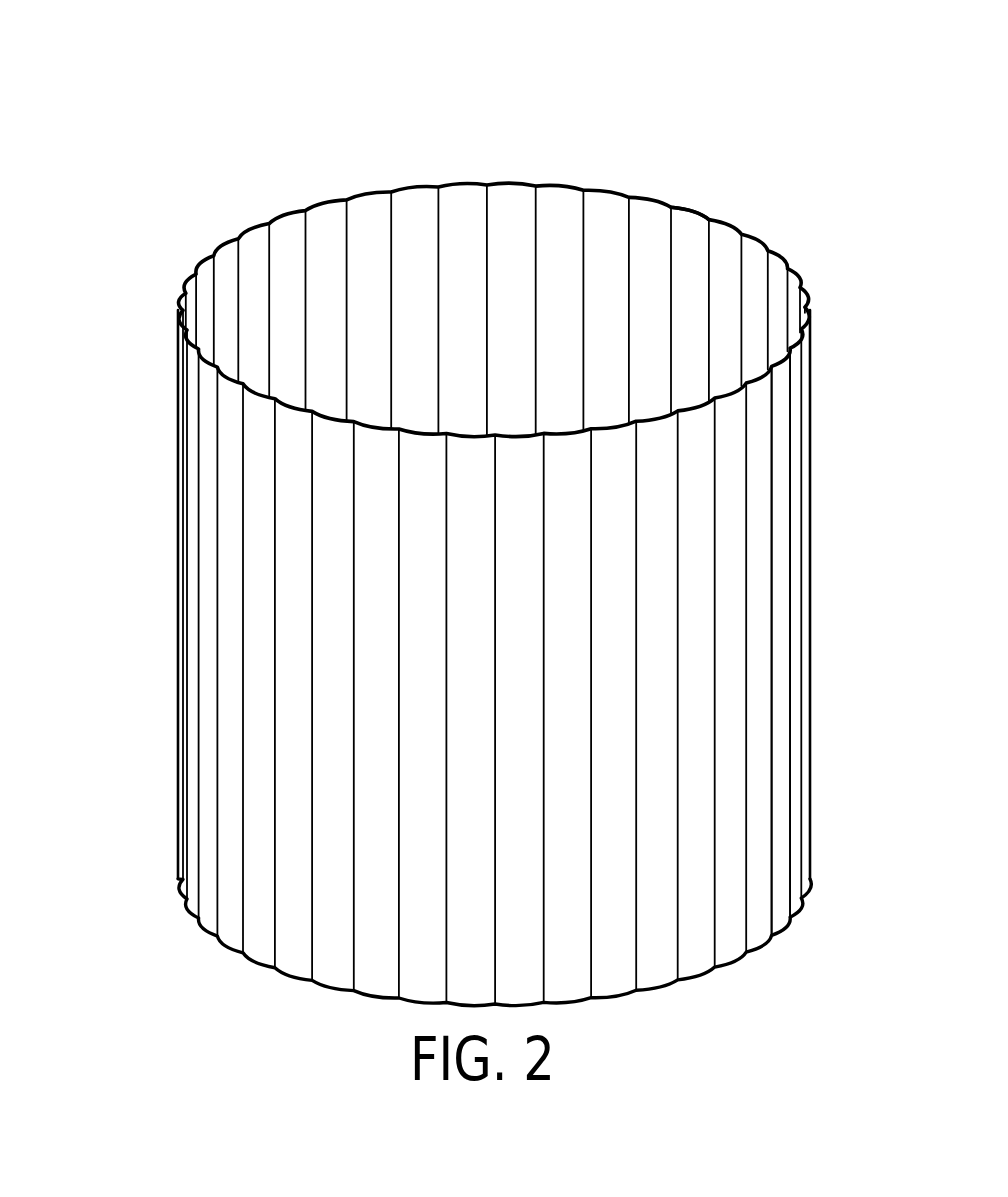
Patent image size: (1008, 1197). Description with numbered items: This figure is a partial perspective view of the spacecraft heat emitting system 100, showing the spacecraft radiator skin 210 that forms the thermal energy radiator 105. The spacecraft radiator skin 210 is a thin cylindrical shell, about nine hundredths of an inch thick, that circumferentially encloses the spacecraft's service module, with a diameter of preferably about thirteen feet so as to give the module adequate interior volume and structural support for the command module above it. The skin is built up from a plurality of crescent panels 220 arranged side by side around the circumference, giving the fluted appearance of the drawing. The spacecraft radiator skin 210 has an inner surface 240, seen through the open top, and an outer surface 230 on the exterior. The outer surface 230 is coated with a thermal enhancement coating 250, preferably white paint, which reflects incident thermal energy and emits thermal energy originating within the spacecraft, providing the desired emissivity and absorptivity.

The spacecraft heat emitting system 100 is at (146, 51).
The thermal energy radiator 105 is at (132, 160).
The spacecraft radiator skin 210 is at (329, 163).
The crescent panel 220 is at (695, 213).
The outer surface 230 is at (780, 730).
The inner surface 240 is at (563, 198).
The thermal enhancement coating 250 is at (212, 805).